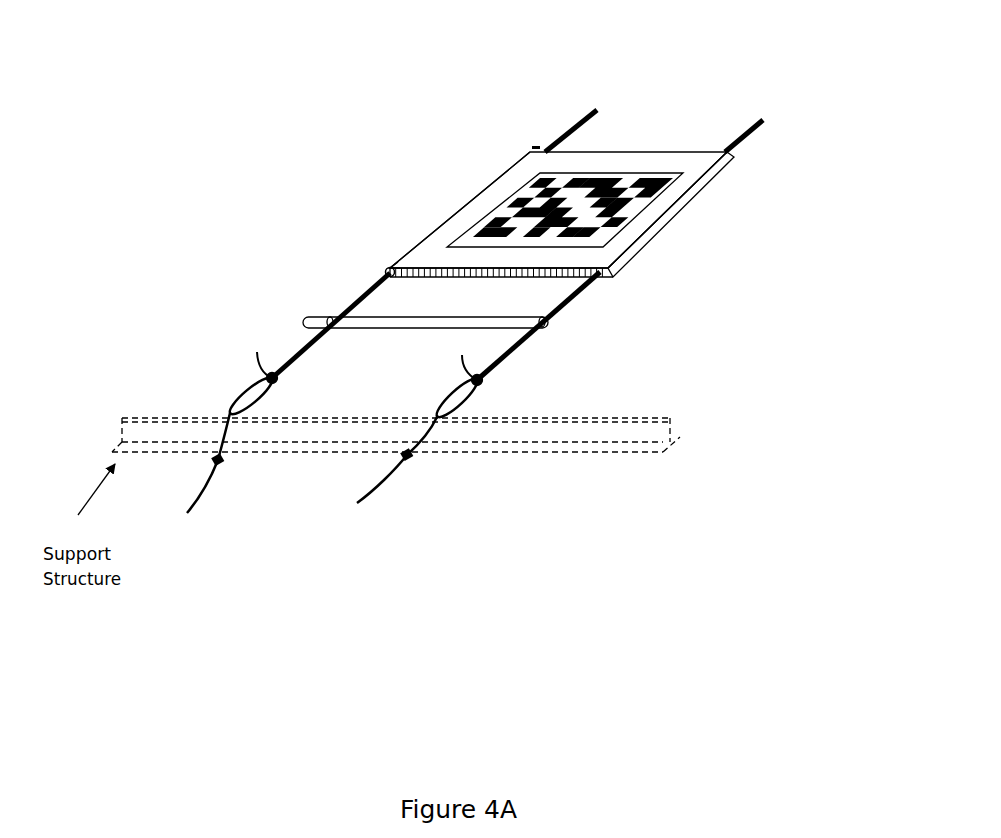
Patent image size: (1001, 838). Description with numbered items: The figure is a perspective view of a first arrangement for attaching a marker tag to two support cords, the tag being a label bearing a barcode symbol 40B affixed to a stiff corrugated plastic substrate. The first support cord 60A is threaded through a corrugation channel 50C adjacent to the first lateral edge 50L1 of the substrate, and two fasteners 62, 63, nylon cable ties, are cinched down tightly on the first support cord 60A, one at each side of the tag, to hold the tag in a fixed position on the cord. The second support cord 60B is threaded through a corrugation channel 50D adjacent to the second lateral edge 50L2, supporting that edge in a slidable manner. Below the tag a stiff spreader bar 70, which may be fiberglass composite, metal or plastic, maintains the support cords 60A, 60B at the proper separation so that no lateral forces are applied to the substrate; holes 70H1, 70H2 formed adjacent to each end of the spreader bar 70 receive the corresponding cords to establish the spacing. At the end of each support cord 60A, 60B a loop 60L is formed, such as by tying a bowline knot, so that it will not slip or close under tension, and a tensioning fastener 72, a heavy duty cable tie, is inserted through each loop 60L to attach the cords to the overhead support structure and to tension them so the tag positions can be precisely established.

The barcode symbol 40B is at (612, 166).
The first lateral edge 50L1 is at (473, 200).
The second lateral edge 50L2 is at (655, 230).
The corrugation channel 50C is at (387, 267).
The corrugation channel 50D is at (606, 280).
The fastener 62 is at (390, 270).
The fastener 63 is at (537, 150).
The spreader bar 70 is at (303, 322).
The hole 70H1 is at (330, 318).
The hole 70H2 is at (540, 322).
The first support cord 60A is at (305, 343).
The second support cord 60B is at (498, 368).
The loop 60L is at (238, 395).
The tensioning fastener 72 is at (407, 455).